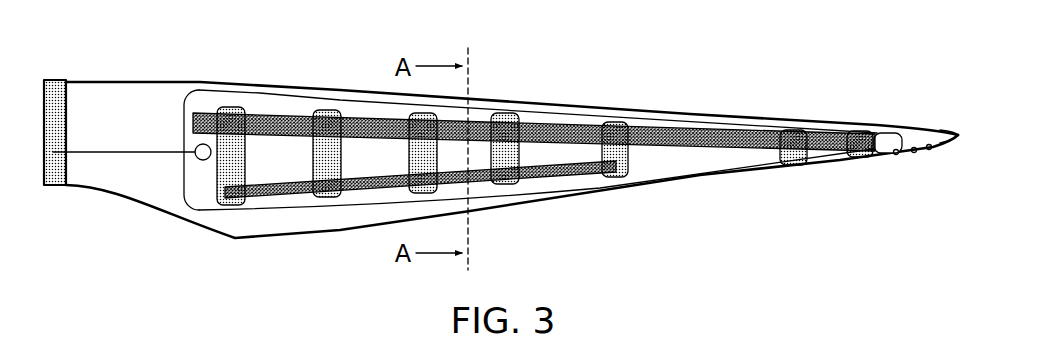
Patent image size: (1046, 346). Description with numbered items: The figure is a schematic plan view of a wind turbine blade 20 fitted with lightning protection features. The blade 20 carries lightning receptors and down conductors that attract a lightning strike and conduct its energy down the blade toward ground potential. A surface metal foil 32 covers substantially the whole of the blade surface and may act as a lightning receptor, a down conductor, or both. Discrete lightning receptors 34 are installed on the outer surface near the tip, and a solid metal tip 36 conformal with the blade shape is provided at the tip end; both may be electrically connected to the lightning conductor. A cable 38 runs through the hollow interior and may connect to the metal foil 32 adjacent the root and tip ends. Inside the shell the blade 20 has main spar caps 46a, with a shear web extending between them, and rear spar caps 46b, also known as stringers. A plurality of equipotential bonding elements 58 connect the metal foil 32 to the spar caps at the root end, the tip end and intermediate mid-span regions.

The blade 20 is at (690, 86).
The metal foil 32 is at (186, 84).
The discrete lightning receptors 34 is at (942, 146).
The metal tip 36 is at (956, 133).
The cable 38 is at (150, 153).
The main spar caps 46a is at (283, 118).
The rear spar caps 46b is at (280, 200).
The equipotential bonding elements 58 is at (509, 117).